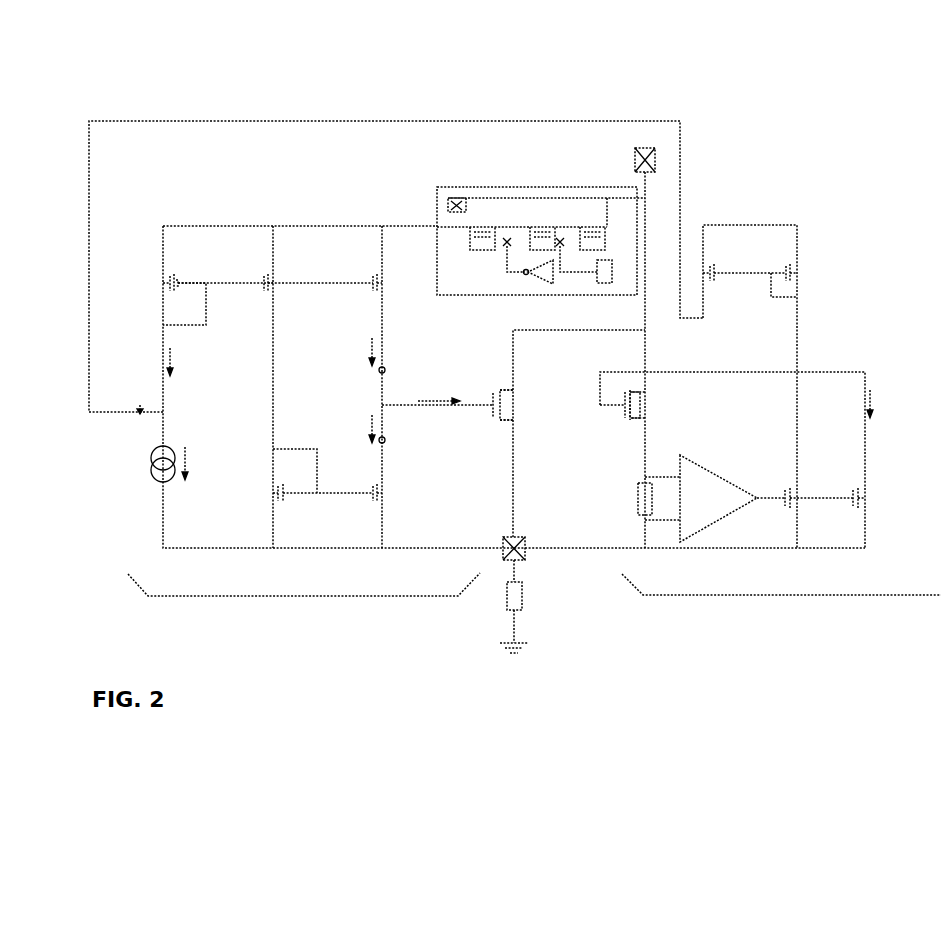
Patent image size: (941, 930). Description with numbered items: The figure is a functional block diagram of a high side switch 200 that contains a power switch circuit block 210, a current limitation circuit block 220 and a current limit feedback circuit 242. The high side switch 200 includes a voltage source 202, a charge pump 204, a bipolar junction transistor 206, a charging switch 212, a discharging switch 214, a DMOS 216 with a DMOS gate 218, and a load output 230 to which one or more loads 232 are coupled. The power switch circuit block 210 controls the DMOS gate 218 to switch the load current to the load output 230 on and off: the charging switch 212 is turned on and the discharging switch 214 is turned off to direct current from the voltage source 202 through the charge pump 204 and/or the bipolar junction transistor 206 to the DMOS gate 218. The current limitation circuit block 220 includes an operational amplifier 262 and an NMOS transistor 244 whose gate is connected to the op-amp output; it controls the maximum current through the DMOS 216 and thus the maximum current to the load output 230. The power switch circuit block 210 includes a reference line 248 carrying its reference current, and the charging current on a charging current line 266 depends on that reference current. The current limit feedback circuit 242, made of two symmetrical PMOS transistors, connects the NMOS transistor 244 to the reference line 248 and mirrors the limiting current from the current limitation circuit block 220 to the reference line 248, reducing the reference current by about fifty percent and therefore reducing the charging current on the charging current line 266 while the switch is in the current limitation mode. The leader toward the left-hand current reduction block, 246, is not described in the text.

The high side switch 200 is at (137, 78).
The voltage source 202 is at (651, 146).
The charge pump 204 is at (620, 239).
The bipolar junction transistor 206 is at (453, 200).
The power switch circuit block 210 is at (491, 419).
The charging switch 212 is at (380, 371).
The discharging switch 214 is at (380, 441).
The DMOS 216 is at (505, 392).
The DMOS gate 218 is at (493, 408).
The current limitation circuit block 220 is at (768, 503).
The load output 230 is at (508, 563).
The loads 232 is at (524, 609).
The current limit feedback circuit 242 is at (808, 228).
The NMOS transistor 244 is at (807, 487).
The current reduction block 246 is at (118, 455).
The reference line 248 is at (163, 363).
The operational amplifier 262 is at (707, 463).
The charging current line 266 is at (386, 360).